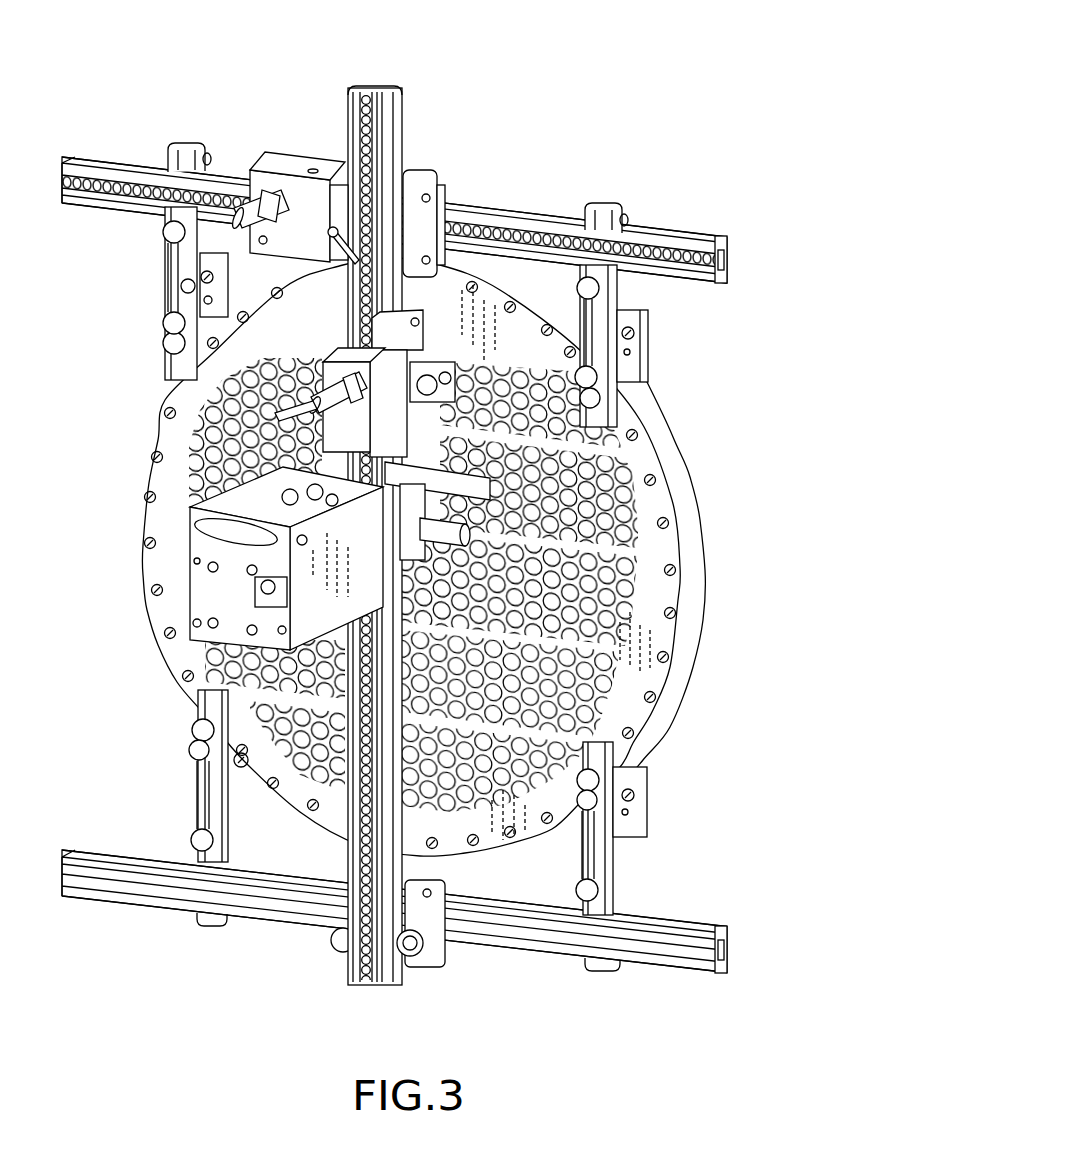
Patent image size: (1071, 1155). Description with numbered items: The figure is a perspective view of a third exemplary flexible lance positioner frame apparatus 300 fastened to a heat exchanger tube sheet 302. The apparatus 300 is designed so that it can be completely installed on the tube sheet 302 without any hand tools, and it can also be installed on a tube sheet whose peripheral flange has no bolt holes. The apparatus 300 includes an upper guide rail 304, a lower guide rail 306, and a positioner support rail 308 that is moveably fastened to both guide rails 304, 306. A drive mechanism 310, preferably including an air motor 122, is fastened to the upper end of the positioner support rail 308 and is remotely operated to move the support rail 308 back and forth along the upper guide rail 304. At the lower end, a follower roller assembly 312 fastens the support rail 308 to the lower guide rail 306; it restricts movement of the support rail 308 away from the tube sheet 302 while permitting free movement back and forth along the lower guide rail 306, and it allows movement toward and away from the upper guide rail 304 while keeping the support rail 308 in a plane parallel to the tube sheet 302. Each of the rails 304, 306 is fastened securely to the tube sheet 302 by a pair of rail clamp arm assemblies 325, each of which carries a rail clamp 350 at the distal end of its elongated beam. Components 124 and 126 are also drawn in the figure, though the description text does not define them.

The flexible lance positioner frame apparatus 300 is at (704, 78).
The tube sheet 302 is at (690, 517).
The upper guide rail 304 is at (682, 225).
The lower guide rail 306 is at (710, 920).
The positioner support rail 308 is at (405, 114).
The drive mechanism 310 is at (297, 162).
The follower roller assembly 312 is at (430, 968).
The air motor 122 is at (242, 148).
The control box 124 is at (168, 570).
The second probe 126 is at (250, 393).
The rail clamp arm assemblies 325 is at (146, 284).
The rail clamp 350 is at (187, 143).